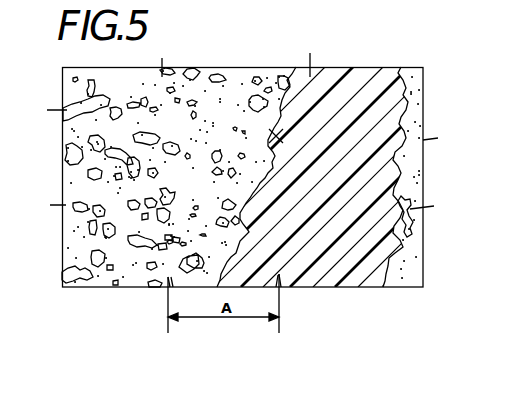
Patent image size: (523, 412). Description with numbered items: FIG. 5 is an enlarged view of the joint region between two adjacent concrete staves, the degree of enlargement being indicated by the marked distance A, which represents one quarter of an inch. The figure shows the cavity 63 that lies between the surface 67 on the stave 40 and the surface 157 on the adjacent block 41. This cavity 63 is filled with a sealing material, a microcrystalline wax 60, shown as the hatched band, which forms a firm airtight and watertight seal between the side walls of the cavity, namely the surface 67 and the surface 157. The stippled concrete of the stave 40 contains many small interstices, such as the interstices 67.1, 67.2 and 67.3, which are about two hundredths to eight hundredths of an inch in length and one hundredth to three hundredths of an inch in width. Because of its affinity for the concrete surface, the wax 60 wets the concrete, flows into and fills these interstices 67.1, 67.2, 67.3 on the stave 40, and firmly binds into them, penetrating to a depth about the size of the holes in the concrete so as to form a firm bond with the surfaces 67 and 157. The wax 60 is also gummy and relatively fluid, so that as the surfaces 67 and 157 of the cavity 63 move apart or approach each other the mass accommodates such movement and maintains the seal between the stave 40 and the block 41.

The stave 40 is at (151, 290).
The block 41 is at (424, 270).
The wax 60 is at (336, 188).
The cavity 63 is at (357, 78).
The surface 67 is at (249, 230).
The interstice 67.1 is at (250, 99).
The interstice 67.2 is at (280, 78).
The interstice 67.3 is at (283, 138).
The surface 157 is at (408, 70).